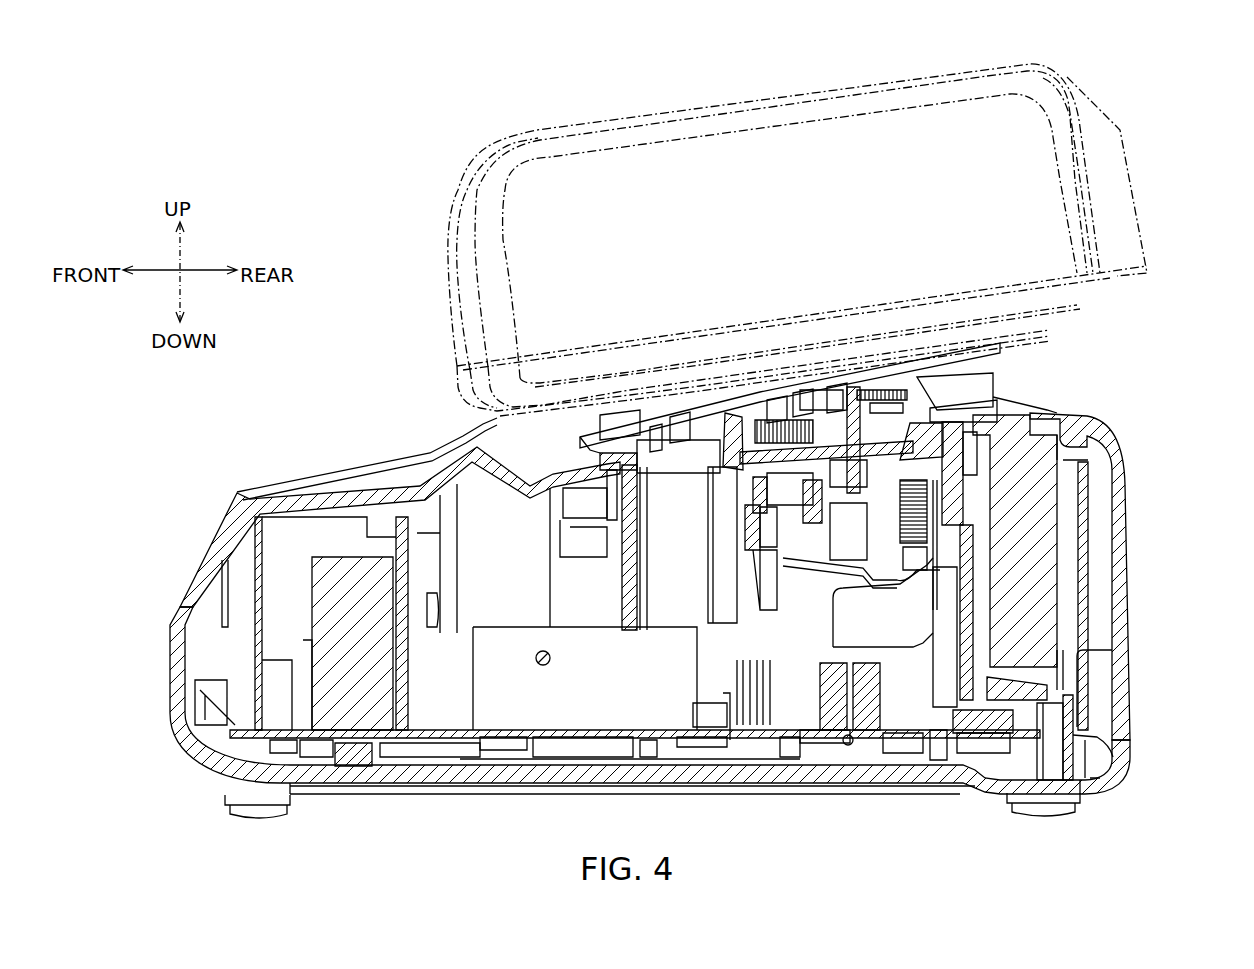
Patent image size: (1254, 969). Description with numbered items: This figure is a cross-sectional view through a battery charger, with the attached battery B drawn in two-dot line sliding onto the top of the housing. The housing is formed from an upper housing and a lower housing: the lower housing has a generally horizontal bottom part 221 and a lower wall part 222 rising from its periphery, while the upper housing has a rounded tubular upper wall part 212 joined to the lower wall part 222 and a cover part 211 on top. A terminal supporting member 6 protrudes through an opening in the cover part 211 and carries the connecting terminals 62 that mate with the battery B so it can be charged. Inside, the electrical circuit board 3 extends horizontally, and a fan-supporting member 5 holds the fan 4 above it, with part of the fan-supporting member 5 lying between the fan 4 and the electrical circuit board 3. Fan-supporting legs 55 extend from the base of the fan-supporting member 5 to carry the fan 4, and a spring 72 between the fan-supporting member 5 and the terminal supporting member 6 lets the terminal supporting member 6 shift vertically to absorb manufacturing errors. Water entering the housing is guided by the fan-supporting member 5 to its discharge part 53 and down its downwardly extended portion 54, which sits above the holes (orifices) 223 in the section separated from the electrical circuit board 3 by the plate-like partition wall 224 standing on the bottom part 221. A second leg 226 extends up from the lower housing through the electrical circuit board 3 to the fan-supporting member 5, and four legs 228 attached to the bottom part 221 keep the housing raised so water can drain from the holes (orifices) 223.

The battery B is at (1078, 88).
The electrical circuit board 3 is at (1065, 705).
The fan 4 is at (1035, 585).
The fan-supporting member 5 is at (997, 742).
The terminal supporting member 6 is at (930, 447).
The discharge part 53 is at (1064, 677).
The downwardly extended portion 54 is at (1073, 712).
The fan-supporting legs 55 is at (1030, 675).
The connecting terminals 62 is at (935, 400).
The spring 72 is at (965, 447).
The cover part 211 is at (303, 513).
The upper wall part 212 is at (1120, 592).
The bottom part 221 is at (940, 782).
The lower wall part 222 is at (1113, 740).
The holes (orifices) 223 is at (1083, 780).
The partition wall 224 is at (1110, 773).
The second leg 226 is at (765, 700).
The legs 228 is at (258, 822).